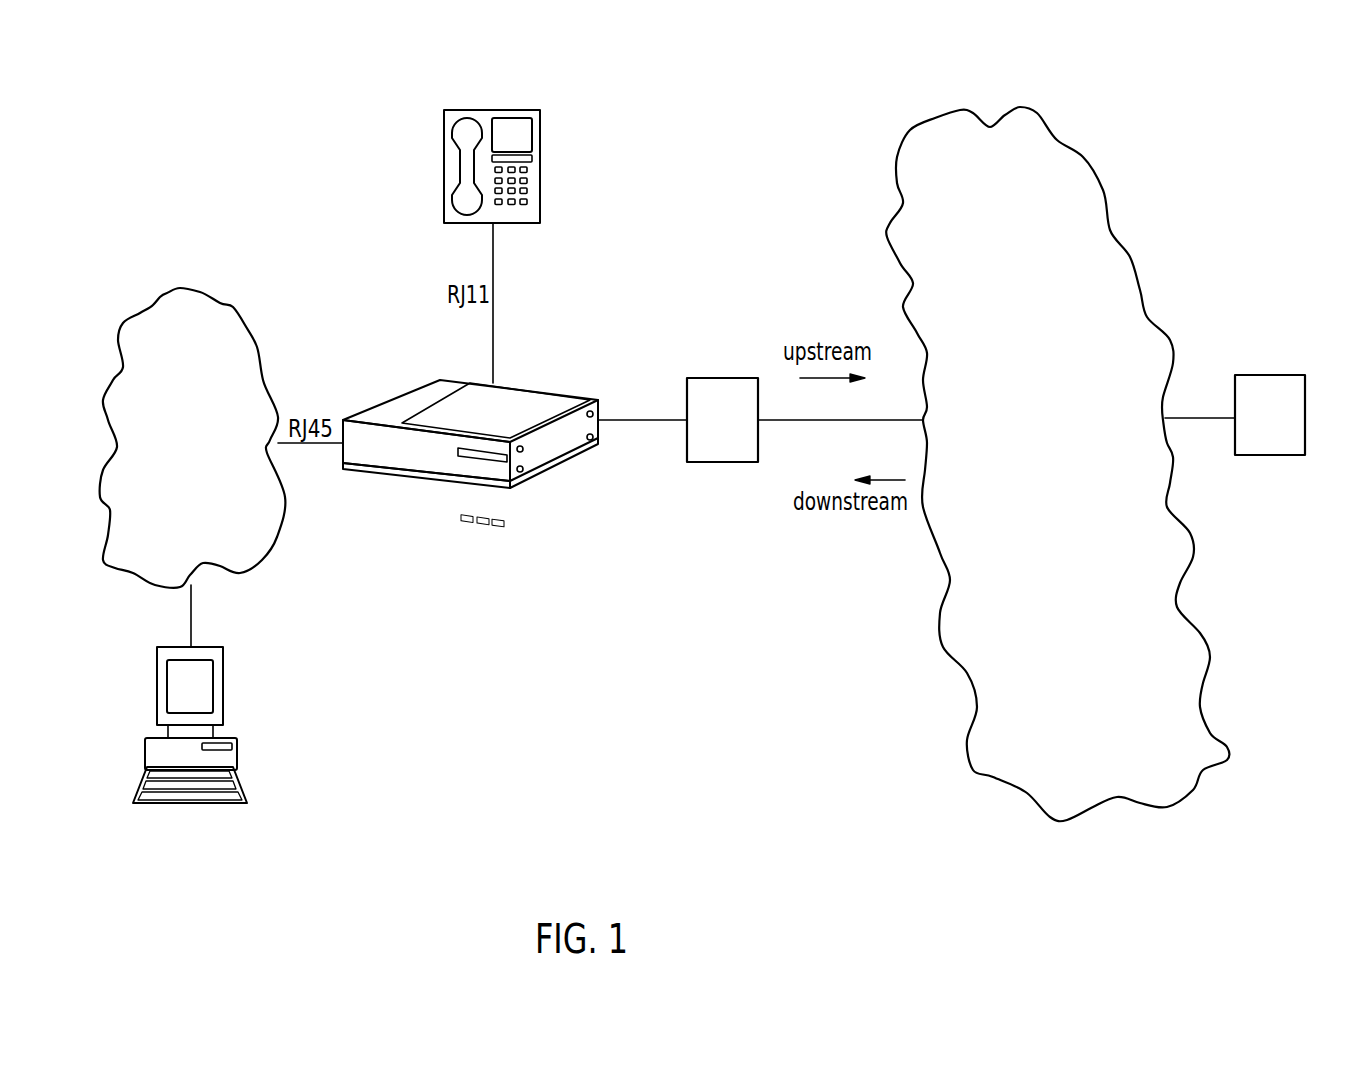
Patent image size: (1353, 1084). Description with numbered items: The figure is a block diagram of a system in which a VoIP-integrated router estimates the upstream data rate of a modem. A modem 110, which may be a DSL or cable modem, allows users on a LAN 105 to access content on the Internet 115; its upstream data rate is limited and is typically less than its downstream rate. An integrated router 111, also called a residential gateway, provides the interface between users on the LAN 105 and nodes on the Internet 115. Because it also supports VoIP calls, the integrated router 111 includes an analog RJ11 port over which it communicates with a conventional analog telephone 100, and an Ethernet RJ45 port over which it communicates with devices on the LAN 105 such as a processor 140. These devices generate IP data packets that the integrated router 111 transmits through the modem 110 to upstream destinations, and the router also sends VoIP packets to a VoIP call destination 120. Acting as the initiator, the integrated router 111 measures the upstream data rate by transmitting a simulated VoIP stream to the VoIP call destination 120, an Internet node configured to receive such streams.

The analog telephone 100 is at (515, 110).
The LAN 105 is at (205, 478).
The modem 110 is at (730, 378).
The integrated router 111 is at (580, 399).
The Internet 115 is at (1066, 530).
The VoIP call destination 120 is at (1287, 446).
The processor 140 is at (223, 667).